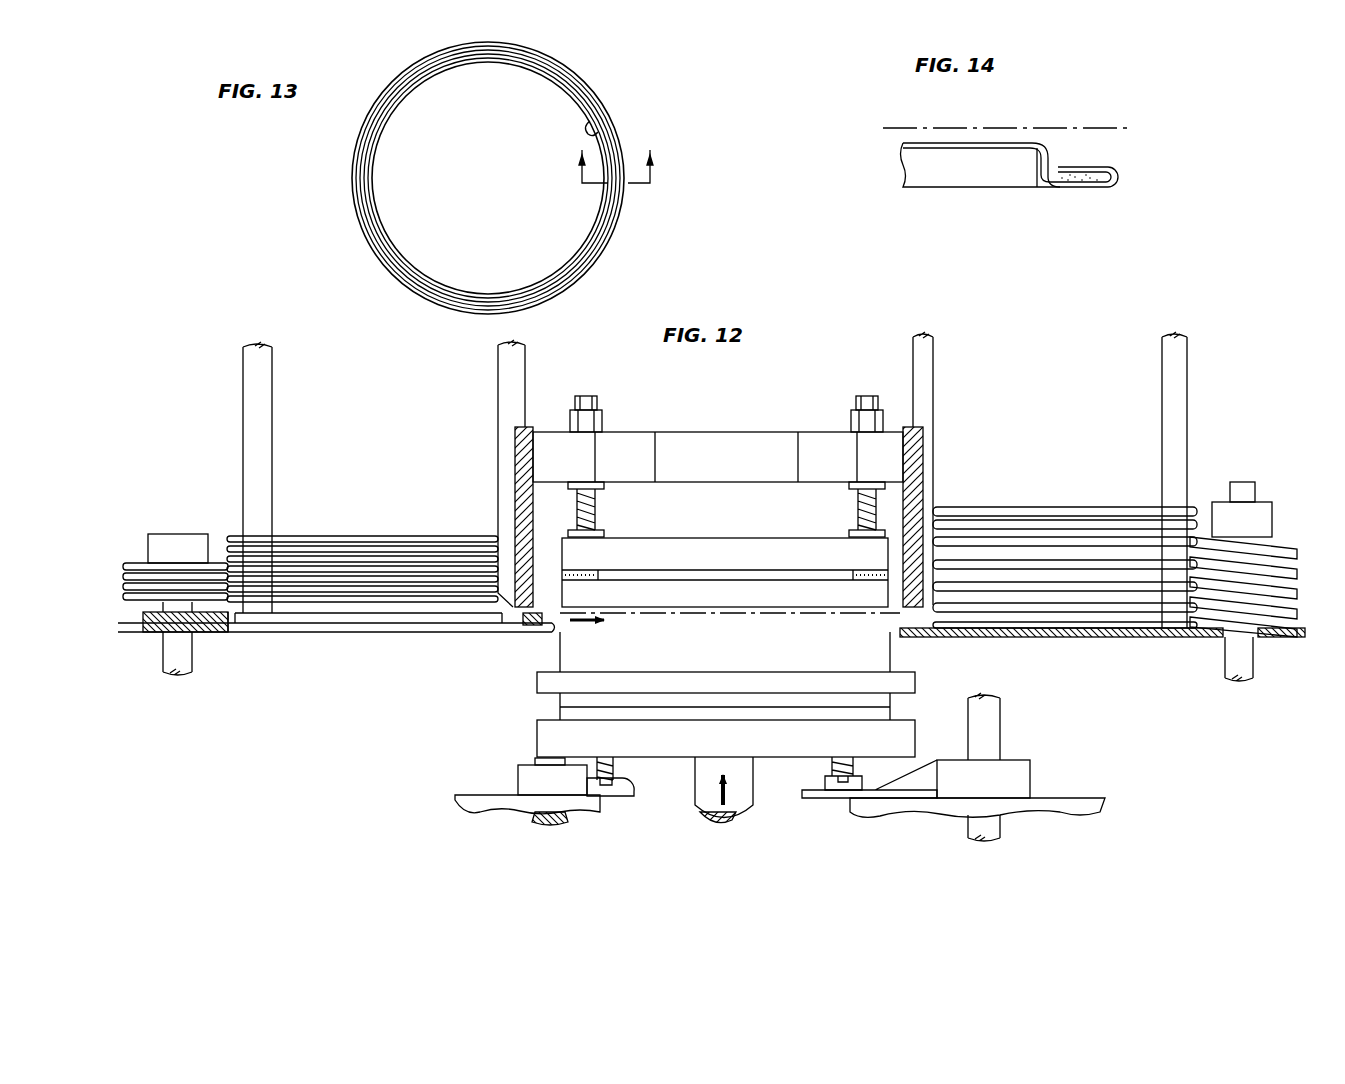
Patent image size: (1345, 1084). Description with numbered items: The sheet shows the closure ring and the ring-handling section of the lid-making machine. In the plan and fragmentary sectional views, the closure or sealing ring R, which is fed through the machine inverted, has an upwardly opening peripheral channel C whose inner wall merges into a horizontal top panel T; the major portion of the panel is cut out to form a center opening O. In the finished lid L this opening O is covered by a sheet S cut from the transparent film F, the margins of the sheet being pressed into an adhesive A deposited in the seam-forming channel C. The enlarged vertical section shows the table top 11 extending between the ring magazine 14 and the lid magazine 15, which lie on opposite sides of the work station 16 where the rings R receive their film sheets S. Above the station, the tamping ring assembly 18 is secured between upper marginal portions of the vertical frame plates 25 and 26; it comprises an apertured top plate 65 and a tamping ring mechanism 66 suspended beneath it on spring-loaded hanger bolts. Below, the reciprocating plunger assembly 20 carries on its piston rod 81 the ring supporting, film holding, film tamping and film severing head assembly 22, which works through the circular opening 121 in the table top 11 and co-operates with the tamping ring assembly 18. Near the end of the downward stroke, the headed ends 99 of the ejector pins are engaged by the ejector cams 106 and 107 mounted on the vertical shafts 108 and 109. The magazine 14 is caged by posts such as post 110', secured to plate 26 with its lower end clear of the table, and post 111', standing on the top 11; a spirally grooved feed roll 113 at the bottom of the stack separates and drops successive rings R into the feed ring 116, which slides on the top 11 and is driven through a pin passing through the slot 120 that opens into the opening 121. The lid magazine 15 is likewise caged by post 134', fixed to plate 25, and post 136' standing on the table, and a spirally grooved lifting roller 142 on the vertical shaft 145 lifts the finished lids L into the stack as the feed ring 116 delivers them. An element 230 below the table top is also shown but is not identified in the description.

In FIG. 12, the table top 11 is at (125, 618).
In FIG. 13, the ring magazine 14 is at (619, 180).
In FIG. 12, the ring magazine 14 is at (226, 477).
In FIG. 12, the lid magazine 15 is at (1208, 424).
In FIG. 12, the work station 16 is at (792, 430).
In FIG. 12, the tamping ring assembly 18 is at (640, 430).
In FIG. 12, the reciprocating plunger assembly 20 is at (522, 735).
In FIG. 12, the head assembly 22 is at (918, 681).
In FIG. 12, the frame plate 25 is at (923, 433).
In FIG. 12, the frame plate 26 is at (533, 430).
In FIG. 12, the apertured top plate 65 is at (818, 447).
In FIG. 12, the tamping ring mechanism 66 is at (797, 543).
In FIG. 12, the piston rod 81 is at (749, 798).
In FIG. 12, the headed ends of ejector pins 99 is at (612, 791).
In FIG. 12, the ejector cam 106 is at (632, 794).
In FIG. 12, the ejector cam 107 is at (830, 798).
In FIG. 12, the vertical shaft 108 is at (538, 818).
In FIG. 12, the vertical shaft 109 is at (991, 743).
In FIG. 12, the cage forming vertical post 110' is at (485, 473).
In FIG. 12, the cage forming vertical post 111' is at (284, 477).
In FIG. 12, the spirally grooved feed roll 113 is at (131, 563).
In FIG. 12, the feed ring 116 is at (513, 626).
In FIG. 12, the slot 120 is at (232, 634).
In FIG. 12, the circular opening 121 is at (552, 634).
In FIG. 12, the cage forming post member 134' is at (952, 468).
In FIG. 12, the cage forming post member 136' is at (1149, 480).
In FIG. 12, the spirally grooved lifting roller 142 is at (1290, 542).
In FIG. 12, the vertical shaft 145 is at (1233, 652).
In FIG. 12, the support post 230 is at (178, 661).
In FIG. 13, the closure ring R is at (607, 243).
In FIG. 14, the closure ring R is at (990, 185).
In FIG. 12, the closure ring R is at (448, 536).
In FIG. 12, the lid L is at (1108, 507).
In FIG. 12, the transparent film F is at (560, 614).
In FIG. 13, the center opening O is at (598, 128).
In FIG. 14, the center opening O is at (905, 143).
In FIG. 14, the sheet S is at (968, 127).
In FIG. 14, the peripheral channel C is at (1110, 170).
In FIG. 14, the top panel T is at (1037, 190).
In FIG. 14, the adhesive A is at (1068, 188).